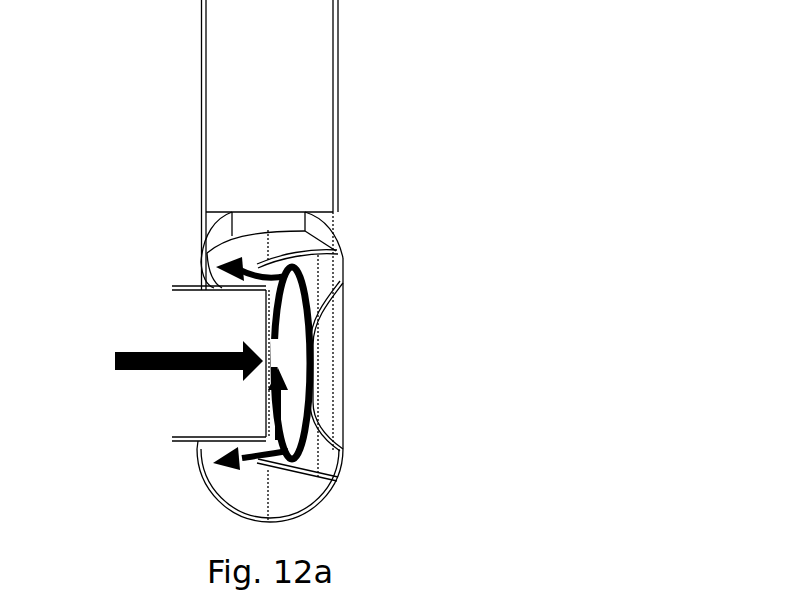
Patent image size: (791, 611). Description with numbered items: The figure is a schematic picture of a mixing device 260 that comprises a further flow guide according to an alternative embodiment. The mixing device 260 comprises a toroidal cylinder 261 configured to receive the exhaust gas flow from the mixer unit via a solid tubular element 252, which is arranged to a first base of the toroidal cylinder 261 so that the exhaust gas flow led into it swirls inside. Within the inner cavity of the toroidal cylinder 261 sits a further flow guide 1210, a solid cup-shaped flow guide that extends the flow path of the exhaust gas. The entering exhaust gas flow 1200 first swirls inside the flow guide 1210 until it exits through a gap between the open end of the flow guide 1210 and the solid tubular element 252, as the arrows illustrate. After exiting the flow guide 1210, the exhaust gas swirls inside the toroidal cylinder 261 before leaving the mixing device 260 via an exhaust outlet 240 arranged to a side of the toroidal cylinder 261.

The exhaust outlet 240 is at (334, 99).
The solid tubular element 252 is at (174, 288).
The mixing device 260 is at (502, 168).
The toroidal cylinder 261 is at (333, 493).
The entering exhaust gas flow 1200 is at (128, 352).
The further flow guide 1210 is at (326, 272).